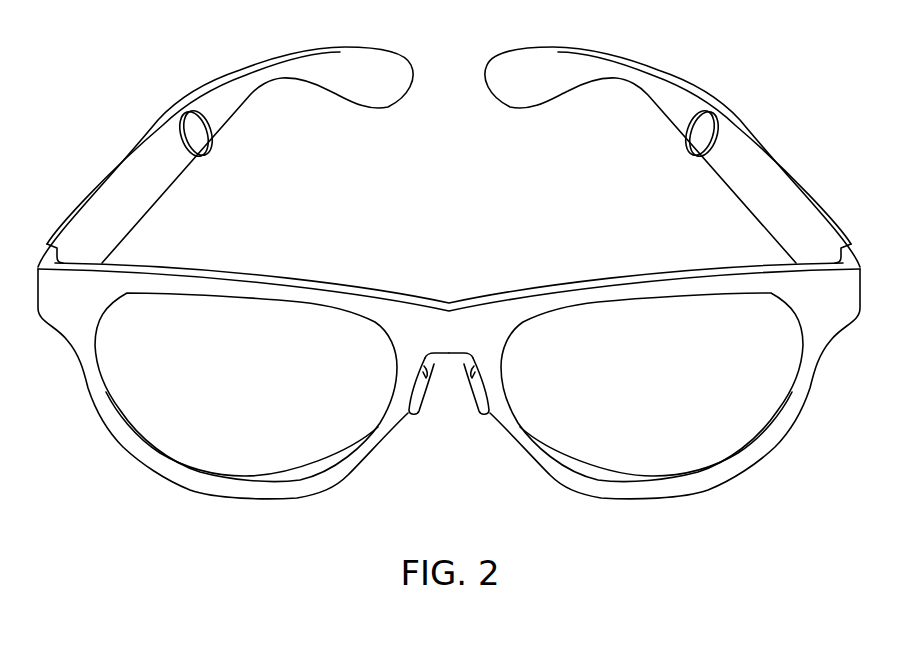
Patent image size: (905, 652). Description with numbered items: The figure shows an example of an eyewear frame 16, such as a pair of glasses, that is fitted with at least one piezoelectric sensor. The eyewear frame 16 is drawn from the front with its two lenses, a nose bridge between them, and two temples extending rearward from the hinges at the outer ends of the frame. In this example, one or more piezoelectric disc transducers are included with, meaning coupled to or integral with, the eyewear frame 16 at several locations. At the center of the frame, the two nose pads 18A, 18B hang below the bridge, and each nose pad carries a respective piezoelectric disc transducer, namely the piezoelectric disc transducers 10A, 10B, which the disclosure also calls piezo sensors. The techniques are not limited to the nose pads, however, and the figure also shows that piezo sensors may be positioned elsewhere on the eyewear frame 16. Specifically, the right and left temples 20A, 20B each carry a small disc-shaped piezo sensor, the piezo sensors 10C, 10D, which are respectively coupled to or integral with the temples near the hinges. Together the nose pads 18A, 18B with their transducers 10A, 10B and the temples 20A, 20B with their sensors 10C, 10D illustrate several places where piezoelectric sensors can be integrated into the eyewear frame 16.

The eyewear frame 16 is at (449, 264).
The right temple 20A is at (225, 157).
The left temple 20B is at (672, 157).
The piezo sensor 10C is at (203, 137).
The piezo sensor 10D is at (695, 136).
The nose pad 18A is at (431, 350).
The nose pad 18B is at (463, 350).
The piezoelectric disc transducer 10A is at (417, 413).
The piezoelectric disc transducer 10B is at (480, 413).